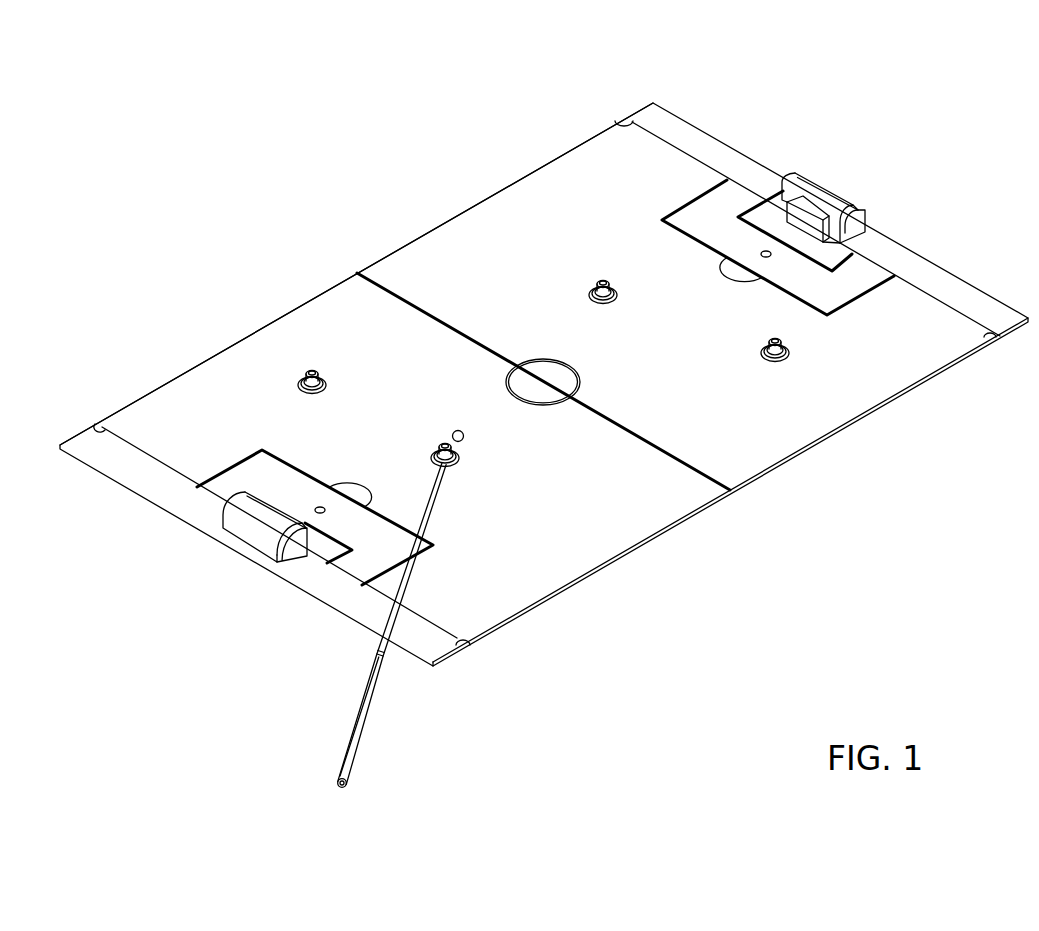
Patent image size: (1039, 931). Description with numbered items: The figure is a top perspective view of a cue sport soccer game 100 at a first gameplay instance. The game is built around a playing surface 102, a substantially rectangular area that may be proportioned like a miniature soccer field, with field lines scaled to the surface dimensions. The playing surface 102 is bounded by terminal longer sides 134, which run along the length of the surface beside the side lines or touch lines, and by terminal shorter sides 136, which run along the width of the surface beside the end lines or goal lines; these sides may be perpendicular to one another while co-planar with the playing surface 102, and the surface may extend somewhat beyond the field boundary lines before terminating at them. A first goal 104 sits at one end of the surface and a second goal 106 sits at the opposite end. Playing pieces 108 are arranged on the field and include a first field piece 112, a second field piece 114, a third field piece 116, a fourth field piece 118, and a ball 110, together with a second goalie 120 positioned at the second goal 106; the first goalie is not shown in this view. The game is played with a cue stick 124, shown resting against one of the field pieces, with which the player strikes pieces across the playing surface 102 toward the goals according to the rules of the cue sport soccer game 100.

The cue sport soccer game 100 is at (318, 96).
The playing surface 102 is at (366, 240).
The first goal 104 is at (236, 563).
The second goal 106 is at (853, 170).
The playing pieces 108 is at (623, 226).
The ball 110 is at (464, 439).
The first field piece 112 is at (440, 450).
The second field piece 114 is at (308, 373).
The third field piece 116 is at (770, 340).
The fourth field piece 118 is at (603, 274).
The second goalie 120 is at (798, 222).
The cue stick 124 is at (377, 690).
The terminal longer sides 134 is at (510, 158).
The terminal shorter sides 136 is at (960, 255).